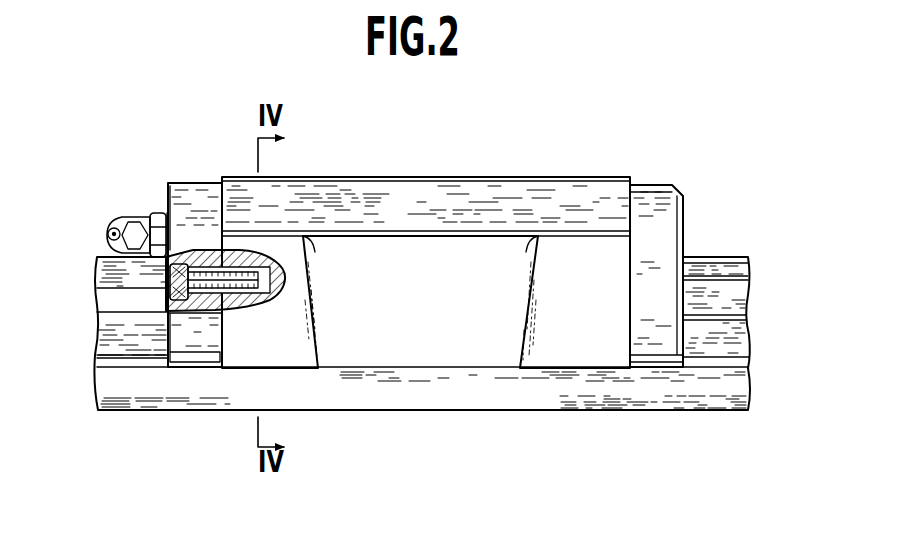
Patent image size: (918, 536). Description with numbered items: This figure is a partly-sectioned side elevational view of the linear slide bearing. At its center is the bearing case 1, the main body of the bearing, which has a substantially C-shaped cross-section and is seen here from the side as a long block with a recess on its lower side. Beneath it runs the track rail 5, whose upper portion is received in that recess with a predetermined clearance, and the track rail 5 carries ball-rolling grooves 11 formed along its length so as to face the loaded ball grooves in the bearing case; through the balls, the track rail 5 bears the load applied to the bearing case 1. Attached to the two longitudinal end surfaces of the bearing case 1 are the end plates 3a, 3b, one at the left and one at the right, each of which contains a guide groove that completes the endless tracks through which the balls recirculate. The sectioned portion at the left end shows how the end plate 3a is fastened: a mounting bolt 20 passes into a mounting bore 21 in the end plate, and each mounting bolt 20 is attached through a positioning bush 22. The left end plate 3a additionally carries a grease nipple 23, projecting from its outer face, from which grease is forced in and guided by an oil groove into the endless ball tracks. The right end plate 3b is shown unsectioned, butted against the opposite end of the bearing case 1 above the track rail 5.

The bearing case 1 is at (529, 175).
The end plate 3a is at (187, 180).
The end plate 3b is at (646, 181).
The track rail 5 is at (719, 252).
The ball-rolling grooves 11 is at (721, 293).
The mounting bolts 20 is at (186, 302).
The mounting bores 21 is at (204, 257).
The positioning bush 22 is at (205, 305).
The grease nipple 23 is at (142, 226).